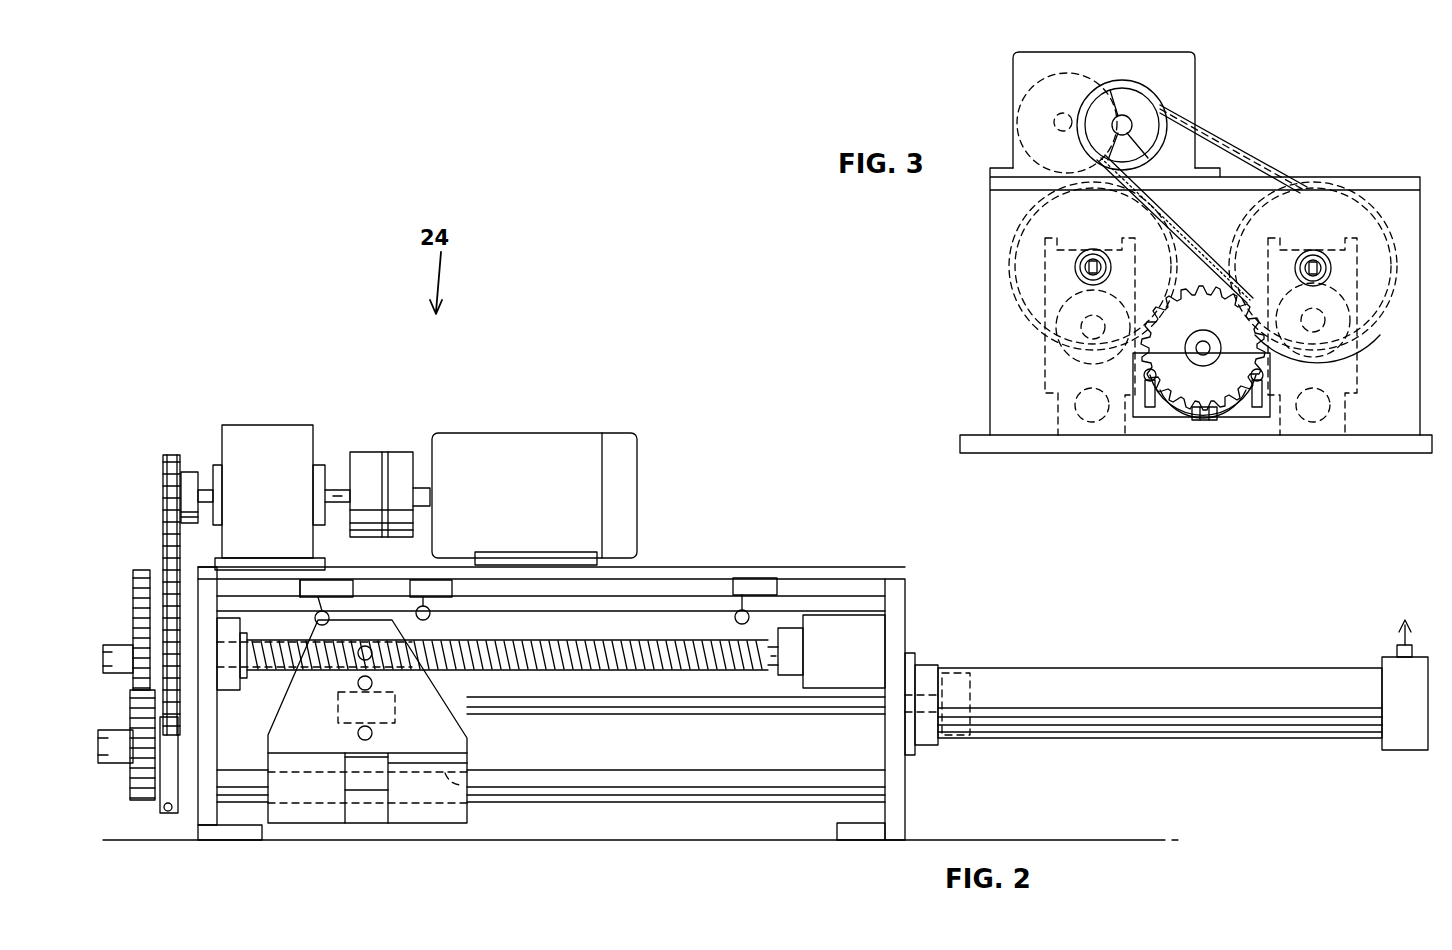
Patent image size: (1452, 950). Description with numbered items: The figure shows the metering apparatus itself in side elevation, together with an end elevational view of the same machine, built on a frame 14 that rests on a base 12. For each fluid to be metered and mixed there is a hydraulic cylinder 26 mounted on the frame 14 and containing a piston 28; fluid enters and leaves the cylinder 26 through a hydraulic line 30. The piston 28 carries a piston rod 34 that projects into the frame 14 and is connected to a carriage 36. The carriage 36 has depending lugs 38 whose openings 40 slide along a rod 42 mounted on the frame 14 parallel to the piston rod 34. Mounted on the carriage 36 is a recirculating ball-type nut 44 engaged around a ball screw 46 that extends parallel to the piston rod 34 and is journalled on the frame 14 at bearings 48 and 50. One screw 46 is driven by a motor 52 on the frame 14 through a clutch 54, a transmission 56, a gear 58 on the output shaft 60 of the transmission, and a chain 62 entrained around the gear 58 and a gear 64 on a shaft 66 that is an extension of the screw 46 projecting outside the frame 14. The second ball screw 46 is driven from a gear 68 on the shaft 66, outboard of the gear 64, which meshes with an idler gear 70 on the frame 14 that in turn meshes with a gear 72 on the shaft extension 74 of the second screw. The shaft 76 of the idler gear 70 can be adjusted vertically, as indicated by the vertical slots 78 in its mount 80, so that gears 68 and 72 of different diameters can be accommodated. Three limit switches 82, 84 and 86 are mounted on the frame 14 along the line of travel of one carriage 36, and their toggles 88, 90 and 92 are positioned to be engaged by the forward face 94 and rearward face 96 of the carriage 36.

In FIG. 3, the base 12 is at (1390, 453).
In FIG. 2, the base 12 is at (952, 838).
In FIG. 2, the frame 14 is at (908, 613).
In FIG. 2, the hydraulic cylinder 26 is at (1285, 740).
In FIG. 2, the piston 28 is at (970, 687).
In FIG. 2, the hydraulic line 30 is at (1393, 648).
In FIG. 3, the piston rod 34 is at (1060, 330).
In FIG. 2, the piston rod 34 is at (723, 712).
In FIG. 3, the carriage 36 is at (1042, 368).
In FIG. 2, the carriage 36 is at (468, 740).
In FIG. 3, the depending lugs 38 is at (1058, 413).
In FIG. 2, the depending lugs 38 is at (470, 818).
In FIG. 2, the openings 40 is at (472, 772).
In FIG. 3, the rod 42 is at (1088, 422).
In FIG. 2, the rod 42 is at (632, 777).
In FIG. 2, the recirculating ball-type nut 44 is at (330, 680).
In FIG. 2, the ball screw 46 is at (583, 636).
In FIG. 2, the journal 48 is at (840, 615).
In FIG. 2, the journal 50 is at (260, 680).
In FIG. 2, the motor 52 is at (585, 435).
In FIG. 2, the clutch 54 is at (378, 452).
In FIG. 3, the transmission 56 is at (1187, 68).
In FIG. 2, the transmission 56 is at (295, 425).
In FIG. 3, the gear 58 is at (1162, 118).
In FIG. 2, the gear 58 is at (163, 478).
In FIG. 3, the output shaft 60 is at (1130, 132).
In FIG. 2, the output shaft 60 is at (205, 490).
In FIG. 3, the chain 62 is at (1262, 160).
In FIG. 2, the chain 62 is at (163, 540).
In FIG. 2, the gear 64 is at (205, 698).
In FIG. 3, the shaft 66 is at (1313, 258).
In FIG. 2, the shaft 66 is at (202, 630).
In FIG. 3, the gear 68 is at (1240, 240).
In FIG. 2, the gear 68 is at (133, 618).
In FIG. 3, the idler gear 70 is at (1215, 323).
In FIG. 2, the idler gear 70 is at (145, 795).
In FIG. 3, the gear 72 is at (1015, 264).
In FIG. 3, the shaft extension 74 is at (1095, 258).
In FIG. 3, the shaft 76 is at (1196, 352).
In FIG. 2, the shaft 76 is at (98, 740).
In FIG. 3, the vertical slots 78 is at (1150, 407).
In FIG. 3, the mount 80 is at (1215, 420).
In FIG. 2, the limit switch 82 is at (358, 585).
In FIG. 2, the limit switch 84 is at (445, 580).
In FIG. 2, the limit switch 86 is at (760, 578).
In FIG. 2, the toggle 88 is at (300, 590).
In FIG. 2, the toggle 90 is at (432, 614).
In FIG. 2, the toggle 92 is at (733, 618).
In FIG. 2, the forward face 94 is at (428, 665).
In FIG. 2, the rearward face 96 is at (314, 620).